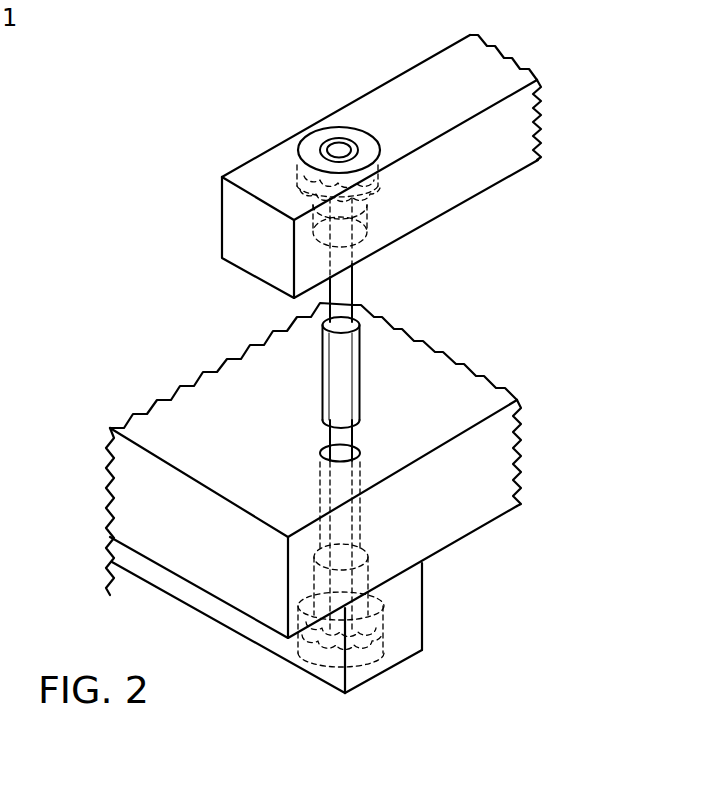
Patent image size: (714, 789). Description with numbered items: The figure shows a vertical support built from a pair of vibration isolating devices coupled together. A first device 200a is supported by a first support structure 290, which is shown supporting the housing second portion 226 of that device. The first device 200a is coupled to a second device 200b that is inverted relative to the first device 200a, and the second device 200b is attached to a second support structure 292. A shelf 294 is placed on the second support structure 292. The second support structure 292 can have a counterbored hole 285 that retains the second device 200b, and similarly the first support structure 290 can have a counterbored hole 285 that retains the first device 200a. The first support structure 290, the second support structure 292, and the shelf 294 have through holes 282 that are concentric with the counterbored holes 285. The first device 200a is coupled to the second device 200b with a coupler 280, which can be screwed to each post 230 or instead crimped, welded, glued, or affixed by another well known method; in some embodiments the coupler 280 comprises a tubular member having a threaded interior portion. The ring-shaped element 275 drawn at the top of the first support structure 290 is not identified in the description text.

The first device 200a is at (269, 61).
The second device 200b is at (460, 616).
The first support structure 290 is at (422, 70).
The bushing 275 is at (372, 150).
The housing second portion 226 is at (386, 178).
The through hole 282 is at (367, 231).
The post 230 is at (350, 295).
The coupler 280 is at (322, 378).
The shelf 294 is at (110, 513).
The second support structure 292 is at (175, 580).
The counterbored hole 285 is at (380, 670).